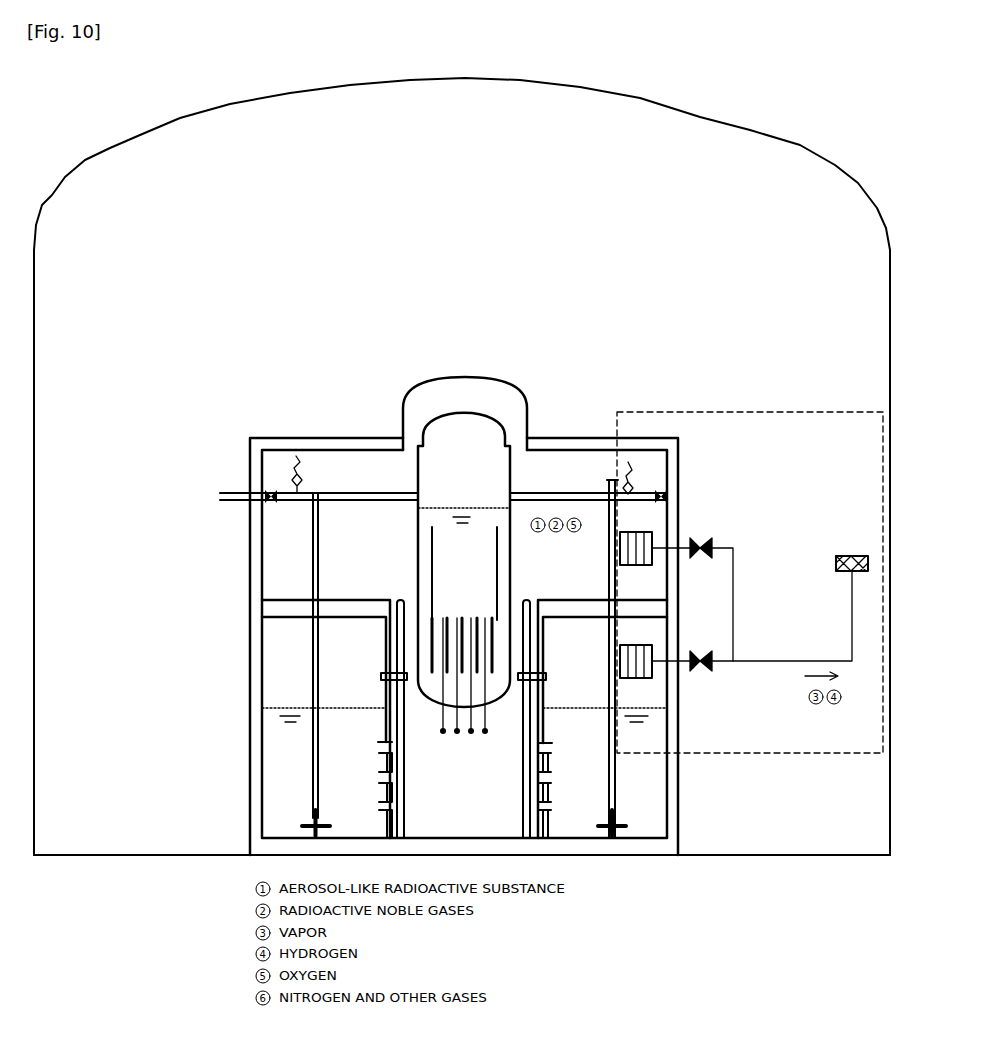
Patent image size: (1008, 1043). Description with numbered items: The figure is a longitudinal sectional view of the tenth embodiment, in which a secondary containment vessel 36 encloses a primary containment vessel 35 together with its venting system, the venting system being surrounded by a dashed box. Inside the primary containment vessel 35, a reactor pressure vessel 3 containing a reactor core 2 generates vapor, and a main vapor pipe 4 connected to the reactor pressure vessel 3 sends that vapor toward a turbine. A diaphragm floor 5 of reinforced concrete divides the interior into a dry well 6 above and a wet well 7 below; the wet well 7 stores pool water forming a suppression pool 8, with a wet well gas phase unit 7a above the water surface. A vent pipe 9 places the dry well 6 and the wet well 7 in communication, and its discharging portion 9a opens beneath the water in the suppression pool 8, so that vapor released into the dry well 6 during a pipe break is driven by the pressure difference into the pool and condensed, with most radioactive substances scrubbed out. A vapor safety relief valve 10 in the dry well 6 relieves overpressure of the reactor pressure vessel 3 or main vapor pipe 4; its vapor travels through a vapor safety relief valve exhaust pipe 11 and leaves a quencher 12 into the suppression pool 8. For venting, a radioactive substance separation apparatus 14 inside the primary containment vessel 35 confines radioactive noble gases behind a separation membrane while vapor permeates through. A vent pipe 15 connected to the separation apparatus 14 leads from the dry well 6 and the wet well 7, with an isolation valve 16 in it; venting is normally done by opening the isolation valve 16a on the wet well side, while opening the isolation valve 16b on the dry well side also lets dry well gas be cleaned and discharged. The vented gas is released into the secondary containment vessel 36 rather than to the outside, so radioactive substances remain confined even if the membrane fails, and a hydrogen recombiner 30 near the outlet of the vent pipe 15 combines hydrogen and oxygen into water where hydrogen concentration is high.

The reactor core 2 is at (490, 620).
The reactor pressure vessel 3 is at (511, 482).
The main vapor pipe 4 is at (345, 495).
The diaphragm floor 5 is at (300, 607).
The dry well 6 is at (270, 545).
The wet well 7 is at (268, 677).
The wet well gas phase unit 7a is at (602, 719).
The suppression pool 8 is at (650, 818).
The vent pipe 9 is at (537, 698).
The discharging portion of the vent pipe 9a is at (377, 800).
The vapor safety relief valve 10 is at (302, 470).
The vapor safety relief valve exhaust pipe 11 is at (313, 639).
The quencher 12 is at (313, 818).
The radioactive substance separation apparatus 14 is at (650, 531).
The vent pipe 15 is at (758, 660).
The isolation valve 16 is at (713, 555).
The isolation valve at a wet well side 16a is at (712, 666).
The isolation valve at a dry well side 16b is at (708, 546).
The hydrogen recombiner 30 is at (847, 556).
The primary containment vessel 35 is at (557, 438).
The secondary containment vessel 36 is at (890, 342).